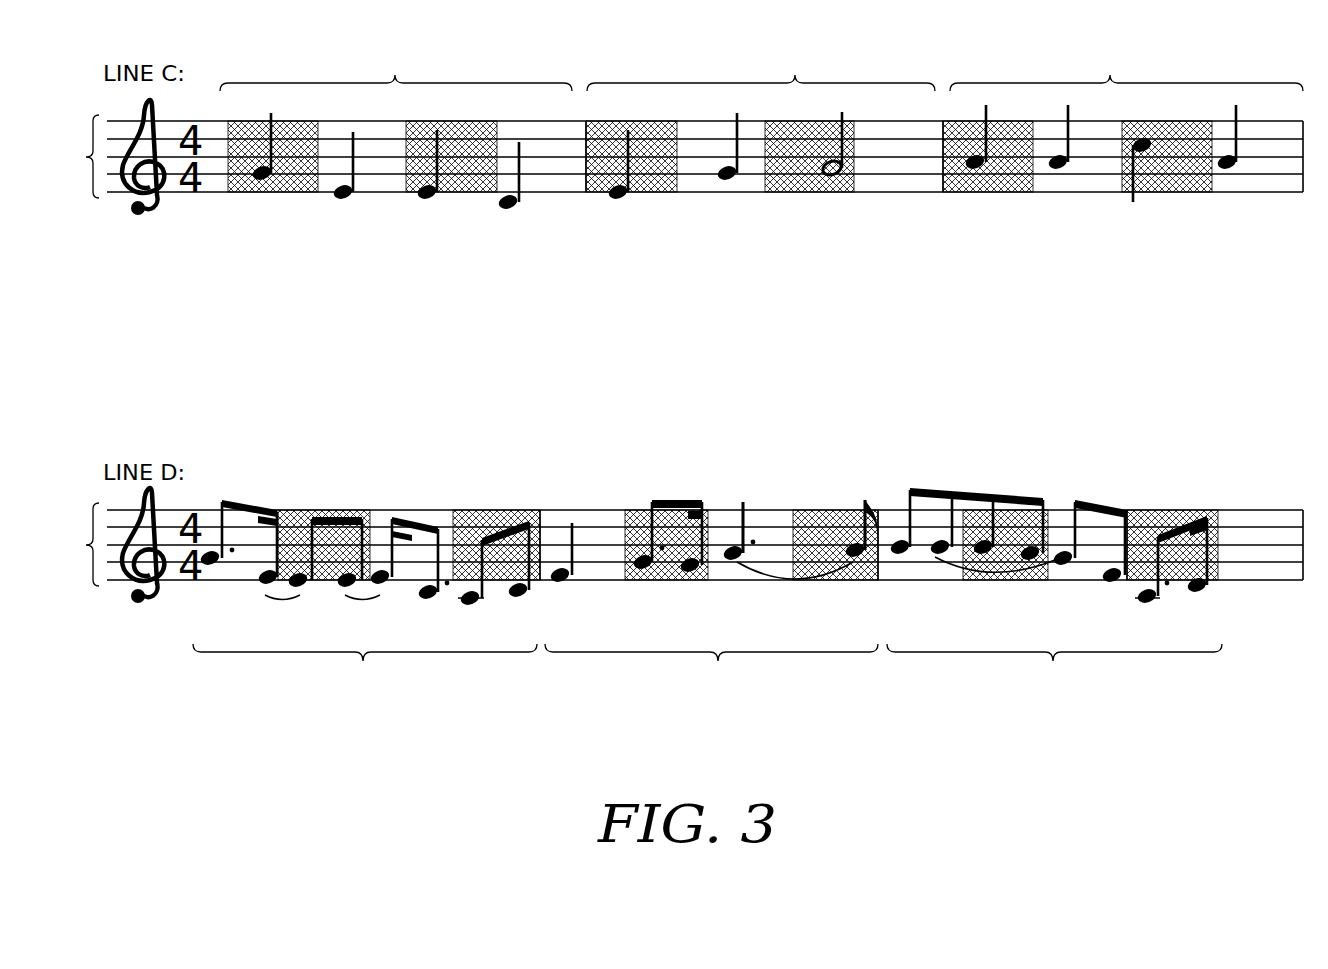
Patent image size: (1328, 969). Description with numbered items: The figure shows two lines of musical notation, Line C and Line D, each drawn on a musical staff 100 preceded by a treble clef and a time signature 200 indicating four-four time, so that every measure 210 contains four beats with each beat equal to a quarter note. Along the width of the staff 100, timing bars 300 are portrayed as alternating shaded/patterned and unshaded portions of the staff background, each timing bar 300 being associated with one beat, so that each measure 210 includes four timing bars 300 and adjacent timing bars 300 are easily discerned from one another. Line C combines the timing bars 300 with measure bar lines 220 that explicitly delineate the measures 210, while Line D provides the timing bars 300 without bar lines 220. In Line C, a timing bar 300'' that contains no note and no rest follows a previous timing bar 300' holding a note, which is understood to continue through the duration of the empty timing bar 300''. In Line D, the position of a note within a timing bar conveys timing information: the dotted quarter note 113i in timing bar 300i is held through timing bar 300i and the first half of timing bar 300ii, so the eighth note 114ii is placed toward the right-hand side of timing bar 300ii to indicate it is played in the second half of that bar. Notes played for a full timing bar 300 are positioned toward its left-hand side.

The musical staff 100 is at (673, 350).
The time signature 200 is at (186, 192).
The measure 210 is at (748, 370).
The bar line 220 is at (587, 192).
The timing bar 300 is at (718, 356).
The previous timing bar 300' is at (817, 184).
The empty timing bar 300'' is at (895, 233).
The timing bar 300i is at (743, 580).
The timing bar 300ii is at (850, 580).
The dotted quarter note 113i is at (743, 500).
The eighth note 114ii is at (863, 500).